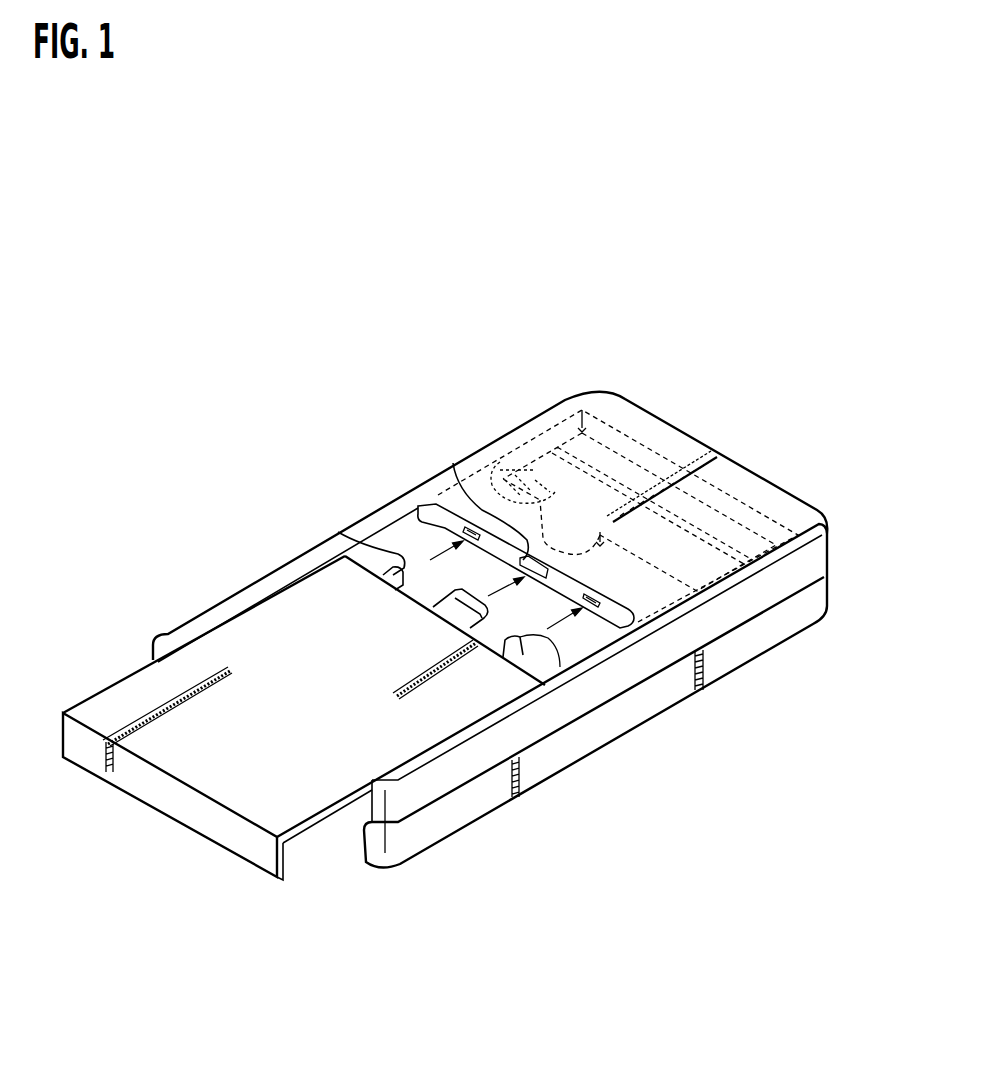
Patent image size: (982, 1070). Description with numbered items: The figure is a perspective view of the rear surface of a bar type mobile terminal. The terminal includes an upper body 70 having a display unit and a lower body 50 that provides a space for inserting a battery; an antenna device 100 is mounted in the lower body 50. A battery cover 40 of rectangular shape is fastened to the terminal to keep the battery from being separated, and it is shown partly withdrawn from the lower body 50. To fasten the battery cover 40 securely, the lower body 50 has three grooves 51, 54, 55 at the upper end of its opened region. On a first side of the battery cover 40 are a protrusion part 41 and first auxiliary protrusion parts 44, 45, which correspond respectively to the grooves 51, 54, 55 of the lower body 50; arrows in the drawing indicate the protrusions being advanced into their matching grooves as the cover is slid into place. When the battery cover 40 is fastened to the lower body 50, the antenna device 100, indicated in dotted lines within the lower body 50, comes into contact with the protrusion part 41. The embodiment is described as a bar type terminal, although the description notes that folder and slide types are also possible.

The battery cover 40 is at (317, 815).
The protrusion part 41 is at (505, 638).
The first auxiliary protrusion part 44 is at (338, 532).
The first auxiliary protrusion part 45 is at (560, 667).
The lower body 50 is at (745, 463).
The groove 51 is at (453, 463).
The groove 54 is at (436, 518).
The groove 55 is at (585, 598).
The upper body 70 is at (823, 597).
The antenna device 100 is at (717, 547).